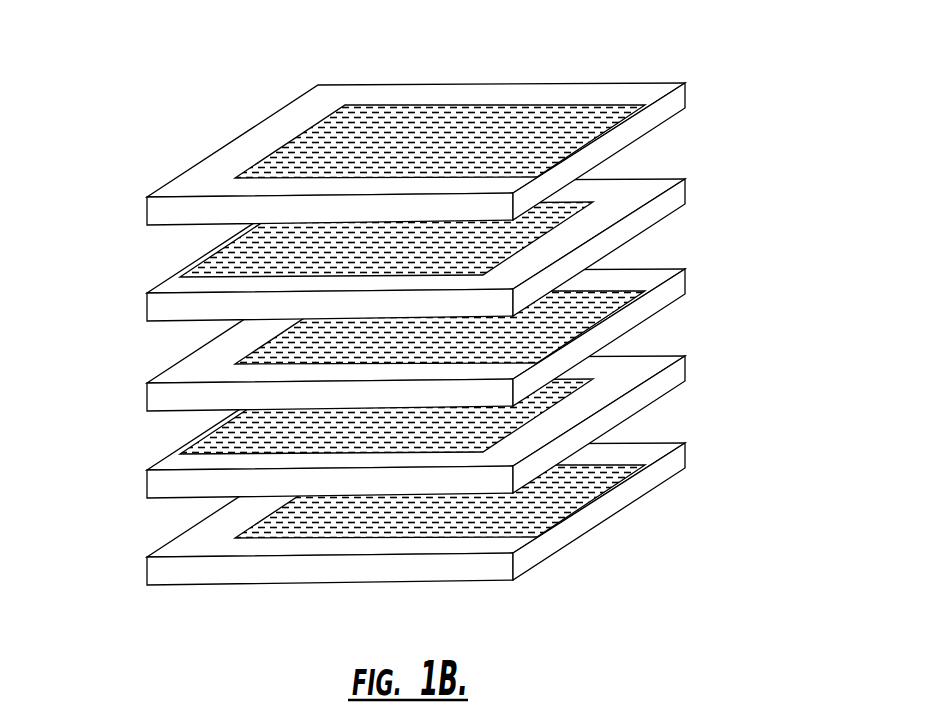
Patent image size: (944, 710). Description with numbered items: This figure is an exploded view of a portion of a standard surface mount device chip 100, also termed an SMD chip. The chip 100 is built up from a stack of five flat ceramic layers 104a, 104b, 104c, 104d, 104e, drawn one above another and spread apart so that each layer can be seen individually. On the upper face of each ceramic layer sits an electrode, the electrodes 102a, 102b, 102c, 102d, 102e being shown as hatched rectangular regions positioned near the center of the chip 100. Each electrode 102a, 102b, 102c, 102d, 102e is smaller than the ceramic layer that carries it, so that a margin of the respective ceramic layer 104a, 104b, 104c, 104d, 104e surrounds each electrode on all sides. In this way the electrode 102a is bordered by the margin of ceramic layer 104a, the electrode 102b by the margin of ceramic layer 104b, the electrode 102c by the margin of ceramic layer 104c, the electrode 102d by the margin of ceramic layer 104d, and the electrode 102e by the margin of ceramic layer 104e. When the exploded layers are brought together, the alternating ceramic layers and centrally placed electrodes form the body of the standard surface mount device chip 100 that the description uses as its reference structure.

The surface mount device chip 100 is at (440, 295).
The electrode 102a is at (293, 165).
The electrode 102b is at (258, 263).
The electrode 102c is at (292, 352).
The electrode 102d is at (265, 429).
The electrode 102e is at (313, 533).
The ceramic layer 104a is at (282, 133).
The ceramic layer 104b is at (670, 203).
The ceramic layer 104c is at (670, 290).
The ceramic layer 104d is at (667, 387).
The ceramic layer 104e is at (660, 477).